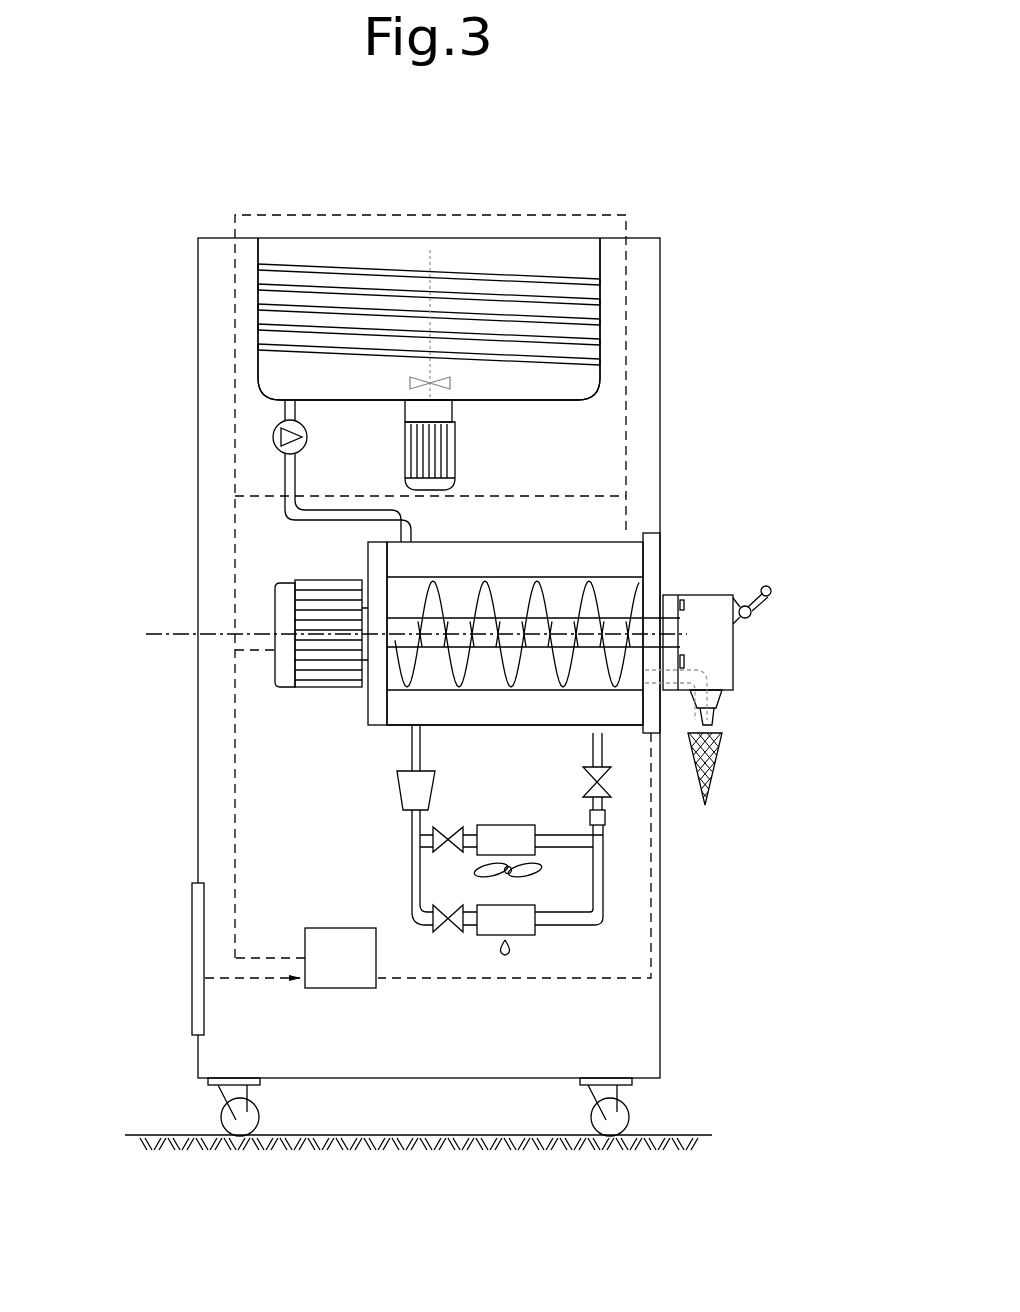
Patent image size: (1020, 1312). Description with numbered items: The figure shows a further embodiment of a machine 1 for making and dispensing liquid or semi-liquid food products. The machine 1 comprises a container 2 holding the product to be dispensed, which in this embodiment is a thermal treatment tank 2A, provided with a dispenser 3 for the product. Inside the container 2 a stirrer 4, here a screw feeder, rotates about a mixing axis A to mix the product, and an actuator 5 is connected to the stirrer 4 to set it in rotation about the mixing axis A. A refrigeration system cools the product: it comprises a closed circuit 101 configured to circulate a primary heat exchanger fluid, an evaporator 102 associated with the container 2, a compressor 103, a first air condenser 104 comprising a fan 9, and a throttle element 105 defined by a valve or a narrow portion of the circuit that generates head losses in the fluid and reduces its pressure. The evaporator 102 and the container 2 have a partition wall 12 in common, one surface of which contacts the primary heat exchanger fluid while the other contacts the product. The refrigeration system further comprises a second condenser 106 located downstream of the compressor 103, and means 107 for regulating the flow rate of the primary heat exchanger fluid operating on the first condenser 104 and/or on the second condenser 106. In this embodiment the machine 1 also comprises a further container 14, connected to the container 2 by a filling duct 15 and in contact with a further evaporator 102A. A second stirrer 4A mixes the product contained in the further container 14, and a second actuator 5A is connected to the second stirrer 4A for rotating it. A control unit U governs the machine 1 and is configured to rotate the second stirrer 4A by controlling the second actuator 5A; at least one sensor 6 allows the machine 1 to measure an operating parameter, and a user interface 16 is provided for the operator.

The machine 1 is at (733, 258).
The container 2 is at (607, 588).
The thermal treatment tank 2A is at (603, 253).
The further container 14 is at (429, 319).
The further evaporator 102A is at (518, 258).
The second stirrer 4A is at (403, 372).
The second actuator 5A is at (462, 452).
The filling duct 15 is at (271, 462).
The actuator 5 is at (275, 583).
The mixing axis A is at (163, 628).
The partition wall 12 is at (573, 573).
The evaporator 102 is at (415, 710).
The stirrer 4 is at (617, 615).
The dispenser 3 is at (717, 658).
The closed circuit 101 is at (375, 760).
The compressor 103 is at (398, 793).
The first air condenser 104 is at (508, 822).
The throttle element 105 is at (608, 785).
The second condenser 106 is at (522, 938).
The flow regulating means 107 is at (443, 853).
The sensor 6 is at (607, 830).
The fan 9 is at (537, 873).
The control unit U is at (338, 990).
The user interface 16 is at (188, 1012).